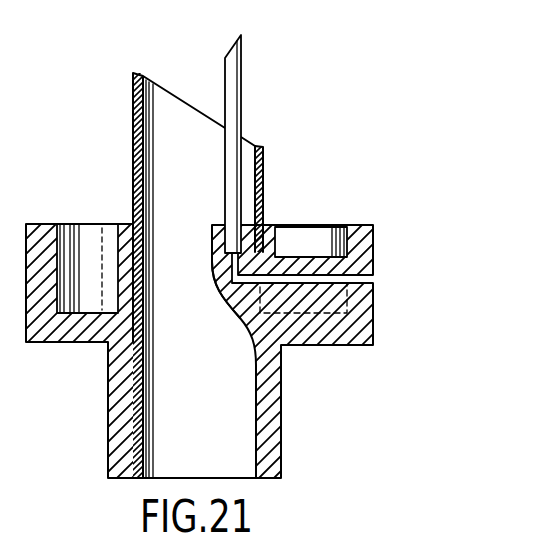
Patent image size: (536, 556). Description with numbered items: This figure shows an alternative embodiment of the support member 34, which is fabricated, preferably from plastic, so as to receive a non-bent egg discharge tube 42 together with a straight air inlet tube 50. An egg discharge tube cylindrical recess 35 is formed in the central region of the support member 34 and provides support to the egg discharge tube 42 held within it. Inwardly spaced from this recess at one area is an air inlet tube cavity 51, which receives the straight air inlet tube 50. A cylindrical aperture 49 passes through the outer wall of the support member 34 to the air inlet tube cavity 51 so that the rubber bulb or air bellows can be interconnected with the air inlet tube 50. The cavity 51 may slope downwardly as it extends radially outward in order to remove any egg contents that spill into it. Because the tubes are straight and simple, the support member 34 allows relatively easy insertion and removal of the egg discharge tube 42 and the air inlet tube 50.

The support member 34 is at (353, 221).
The egg discharge tube cylindrical recess 35 is at (270, 237).
The egg discharge tube 42 is at (132, 102).
The cylindrical aperture 49 is at (372, 278).
The air inlet tube 50 is at (242, 72).
The air inlet tube cavity 51 is at (219, 270).